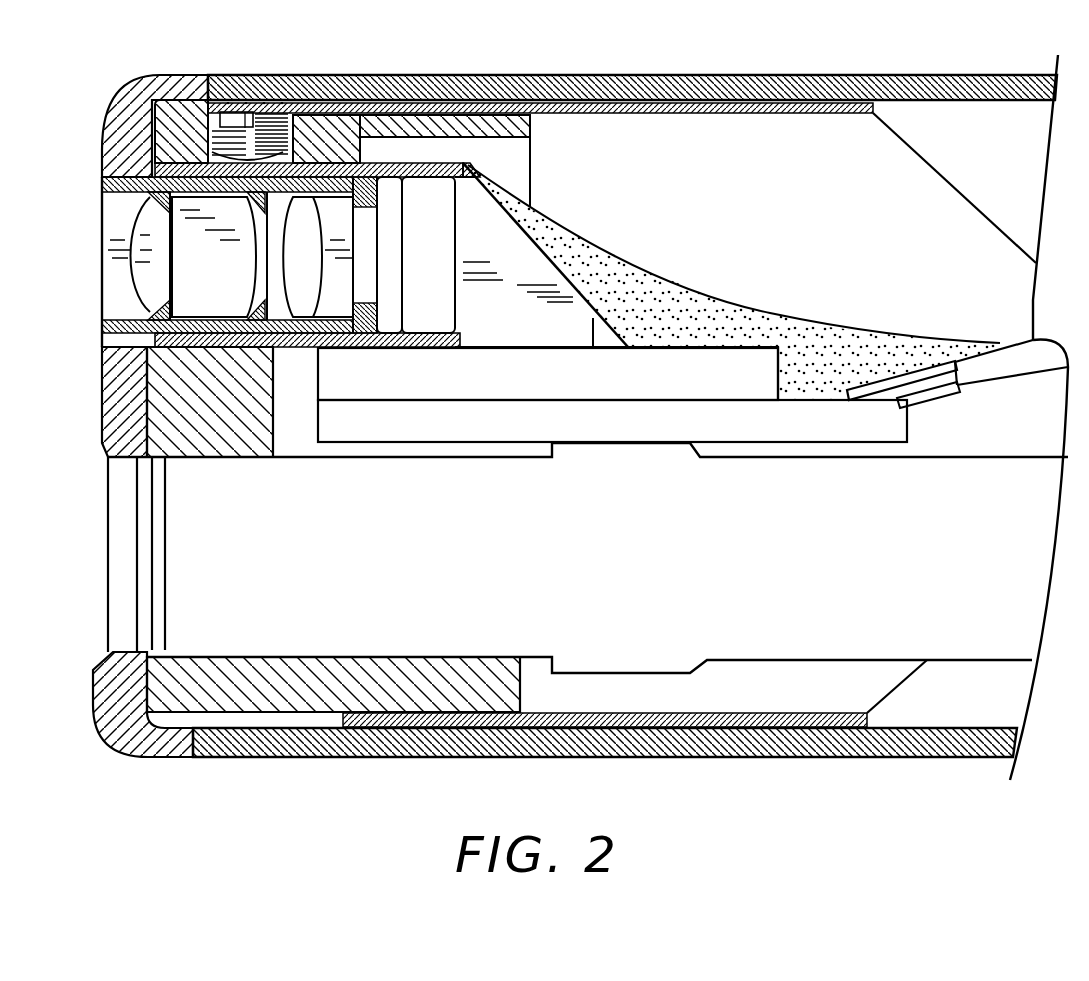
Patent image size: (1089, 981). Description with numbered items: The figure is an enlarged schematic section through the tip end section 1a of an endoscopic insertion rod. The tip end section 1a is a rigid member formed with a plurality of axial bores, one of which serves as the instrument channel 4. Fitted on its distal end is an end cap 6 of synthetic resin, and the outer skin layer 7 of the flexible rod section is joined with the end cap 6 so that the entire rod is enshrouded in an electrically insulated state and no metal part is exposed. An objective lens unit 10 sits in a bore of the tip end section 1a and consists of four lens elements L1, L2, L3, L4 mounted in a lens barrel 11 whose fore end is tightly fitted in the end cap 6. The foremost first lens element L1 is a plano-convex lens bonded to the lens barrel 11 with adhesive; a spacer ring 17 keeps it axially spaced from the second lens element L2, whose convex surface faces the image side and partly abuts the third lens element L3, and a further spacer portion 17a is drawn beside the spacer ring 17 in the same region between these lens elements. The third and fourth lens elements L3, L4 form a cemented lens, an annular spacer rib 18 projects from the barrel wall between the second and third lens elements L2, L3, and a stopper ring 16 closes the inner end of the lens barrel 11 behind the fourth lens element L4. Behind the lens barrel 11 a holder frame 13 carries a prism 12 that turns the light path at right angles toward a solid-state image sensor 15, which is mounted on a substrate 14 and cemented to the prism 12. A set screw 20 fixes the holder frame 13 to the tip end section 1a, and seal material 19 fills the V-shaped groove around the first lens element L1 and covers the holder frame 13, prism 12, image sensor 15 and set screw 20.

The tip end section 1a is at (455, 93).
The instrument channel 4 is at (282, 655).
The end cap 6 is at (120, 110).
The outer skin layer 7 is at (990, 725).
The objective lens unit 10 is at (315, 165).
The lens barrel 11 is at (302, 350).
The prism 12 is at (533, 262).
The holder frame 13 is at (383, 350).
The substrate 14 is at (887, 433).
The solid-state image sensor 15 is at (763, 363).
The stopper ring 16 is at (462, 197).
The spacer ring 17 is at (147, 198).
The lens spacer 17a is at (175, 292).
The annular spacer rib 18 is at (255, 277).
The seal material 19 is at (237, 103).
The set screw 20 is at (212, 100).
The first lens element L1 is at (110, 263).
The second lens element L2 is at (173, 270).
The third lens element L3 is at (289, 205).
The fourth lens element L4 is at (345, 200).